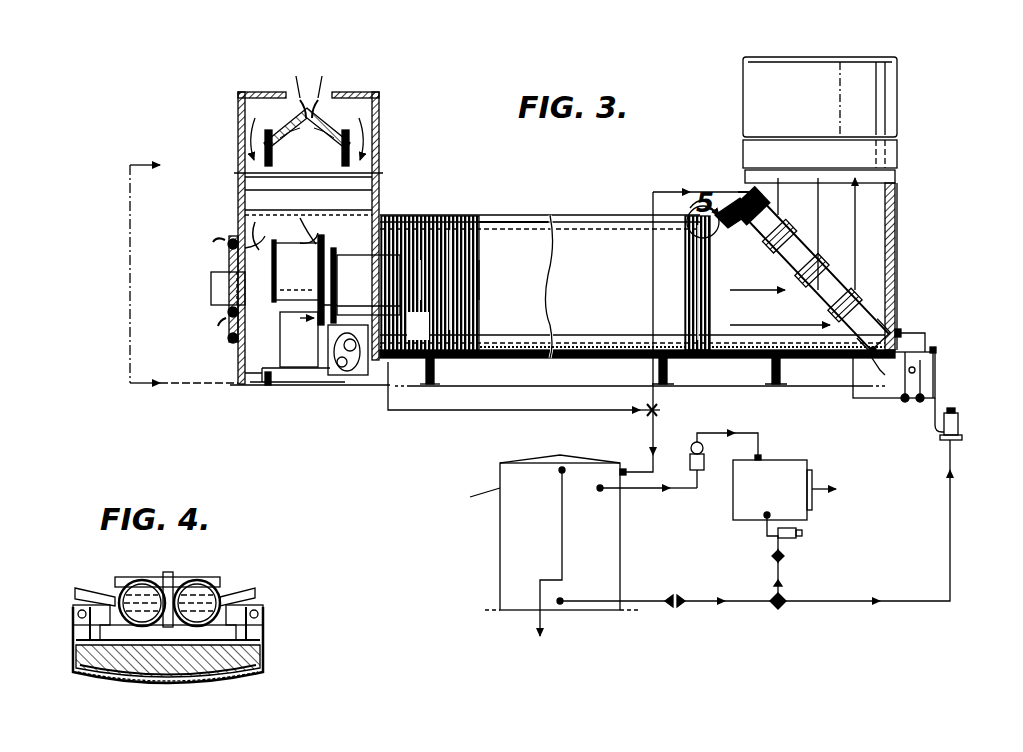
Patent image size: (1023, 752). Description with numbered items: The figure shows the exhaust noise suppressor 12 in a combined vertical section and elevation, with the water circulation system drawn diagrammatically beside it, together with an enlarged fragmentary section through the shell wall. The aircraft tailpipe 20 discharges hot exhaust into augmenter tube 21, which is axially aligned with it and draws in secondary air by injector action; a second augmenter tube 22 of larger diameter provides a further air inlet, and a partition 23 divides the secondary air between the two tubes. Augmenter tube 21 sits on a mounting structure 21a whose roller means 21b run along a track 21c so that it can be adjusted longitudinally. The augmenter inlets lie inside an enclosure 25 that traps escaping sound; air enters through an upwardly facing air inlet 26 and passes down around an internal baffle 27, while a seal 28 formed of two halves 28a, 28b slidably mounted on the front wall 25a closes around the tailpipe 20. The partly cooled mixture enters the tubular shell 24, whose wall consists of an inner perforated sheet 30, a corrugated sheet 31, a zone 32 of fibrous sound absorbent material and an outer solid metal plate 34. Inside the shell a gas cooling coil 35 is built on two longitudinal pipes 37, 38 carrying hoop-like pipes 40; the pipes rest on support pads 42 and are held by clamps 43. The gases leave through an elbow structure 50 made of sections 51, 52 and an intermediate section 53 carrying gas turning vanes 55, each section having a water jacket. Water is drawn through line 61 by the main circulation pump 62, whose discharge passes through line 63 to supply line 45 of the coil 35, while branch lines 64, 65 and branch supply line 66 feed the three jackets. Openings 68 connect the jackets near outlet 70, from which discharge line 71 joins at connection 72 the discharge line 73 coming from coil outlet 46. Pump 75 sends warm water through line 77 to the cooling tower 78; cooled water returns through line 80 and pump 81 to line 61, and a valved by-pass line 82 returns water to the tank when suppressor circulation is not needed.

In FIG. 3, the exhaust noise suppressor 12 is at (487, 192).
In FIG. 3, the tailpipe 20 is at (222, 300).
In FIG. 3, the augmenter tube 21 is at (284, 271).
In FIG. 3, the mounting structure 21a is at (299, 339).
In FIG. 3, the roller means 21b is at (284, 382).
In FIG. 3, the track 21c is at (300, 382).
In FIG. 3, the second augmenter tube 22 is at (360, 285).
In FIG. 3, the partition 23 is at (268, 385).
In FIG. 3, the tubular shell 24 is at (578, 213).
In FIG. 4, the tubular shell 24 is at (248, 680).
In FIG. 3, the enclosure 25 is at (380, 146).
In FIG. 3, the front wall 25a is at (238, 193).
In FIG. 3, the air inlet 26 is at (322, 90).
In FIG. 3, the internal baffle 27 is at (307, 137).
In FIG. 3, the seal 28 is at (229, 262).
In FIG. 3, the upper seal half 28a is at (228, 244).
In FIG. 3, the lower seal half 28b is at (225, 318).
In FIG. 4, the perforated sheet 30 is at (265, 618).
In FIG. 4, the corrugated sheet 31 is at (266, 632).
In FIG. 3, the sound absorbent zone 32 is at (423, 212).
In FIG. 4, the sound absorbent zone 32 is at (276, 660).
In FIG. 4, the solid metal plate 34 is at (212, 680).
In FIG. 3, the gas cooling coil 35 is at (484, 240).
In FIG. 4, the longitudinal pipe 37 is at (140, 580).
In FIG. 3, the longitudinal pipe 38 is at (580, 346).
In FIG. 4, the longitudinal pipe 38 is at (222, 585).
In FIG. 3, the hoop-like pipes 40 is at (484, 262).
In FIG. 4, the hoop-like pipes 40 is at (100, 588).
In FIG. 3, the support pads 42 is at (438, 368).
In FIG. 4, the support pads 42 is at (148, 680).
In FIG. 4, the clamps 43 is at (186, 580).
In FIG. 3, the supply line 45 is at (909, 376).
In FIG. 3, the coil outlet 46 is at (348, 350).
In FIG. 3, the elbow structure 50 is at (907, 218).
In FIG. 3, the elbow section 51 is at (797, 376).
In FIG. 3, the elbow section 52 is at (902, 240).
In FIG. 3, the intermediate section 53 is at (820, 230).
In FIG. 3, the gas turning vanes 55 is at (802, 242).
In FIG. 3, the water line 61 is at (792, 604).
In FIG. 3, the main circulation pump 62 is at (958, 420).
In FIG. 3, the discharge line 63 is at (935, 366).
In FIG. 3, the branch line 64 is at (886, 398).
In FIG. 3, the branch line 65 is at (928, 340).
In FIG. 3, the branch supply line 66 is at (870, 370).
In FIG. 3, the openings 68 is at (756, 200).
In FIG. 3, the outlet 70 is at (744, 198).
In FIG. 3, the discharge line 71 is at (662, 192).
In FIG. 3, the connection 72 is at (536, 391).
In FIG. 3, the discharge line 73 is at (648, 430).
In FIG. 3, the pump 75 is at (709, 460).
In FIG. 3, the line 77 is at (690, 490).
In FIG. 3, the cooling tower 78 is at (792, 490).
In FIG. 3, the line 80 is at (760, 536).
In FIG. 3, the pump 81 is at (806, 530).
In FIG. 3, the valved by-pass line 82 is at (636, 600).